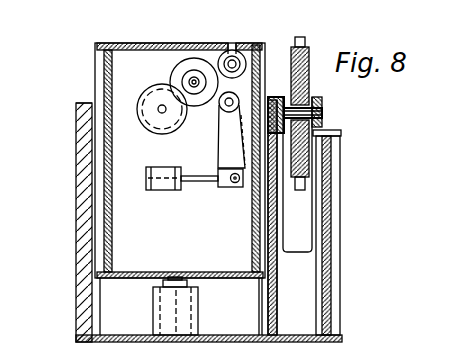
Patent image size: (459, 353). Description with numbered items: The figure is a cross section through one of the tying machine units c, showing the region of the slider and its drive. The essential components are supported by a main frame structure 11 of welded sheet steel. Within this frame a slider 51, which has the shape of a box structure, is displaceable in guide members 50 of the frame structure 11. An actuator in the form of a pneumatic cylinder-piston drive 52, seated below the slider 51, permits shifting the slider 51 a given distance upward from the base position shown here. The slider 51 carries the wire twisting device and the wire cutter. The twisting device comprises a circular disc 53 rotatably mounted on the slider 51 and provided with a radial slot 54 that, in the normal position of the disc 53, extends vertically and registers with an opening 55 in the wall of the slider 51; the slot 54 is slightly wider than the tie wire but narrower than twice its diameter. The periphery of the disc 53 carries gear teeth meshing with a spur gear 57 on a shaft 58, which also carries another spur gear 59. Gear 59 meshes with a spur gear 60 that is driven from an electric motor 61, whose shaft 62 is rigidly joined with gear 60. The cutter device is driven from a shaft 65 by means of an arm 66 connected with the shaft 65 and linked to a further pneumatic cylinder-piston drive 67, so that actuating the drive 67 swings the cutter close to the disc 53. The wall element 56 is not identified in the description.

The main frame structure 11 is at (82, 212).
The guide members 50 is at (95, 295).
The slider 51 is at (107, 70).
The pneumatic cylinder-piston drive 52 is at (199, 308).
The circular disc 53 is at (256, 48).
The radial slot 54 is at (226, 48).
The opening 55 is at (232, 49).
The housing top wall 56 is at (143, 43).
The spur gear 57 is at (175, 72).
The shaft 58 is at (194, 87).
The spur gear 59 is at (194, 77).
The spur gear 60 is at (146, 100).
The electric motor 61 is at (169, 129).
The shaft 62 is at (160, 112).
The shaft 65 is at (236, 98).
The arm 66 is at (226, 150).
The pneumatic cylinder-piston drive 67 is at (162, 191).
The units c is at (72, 315).